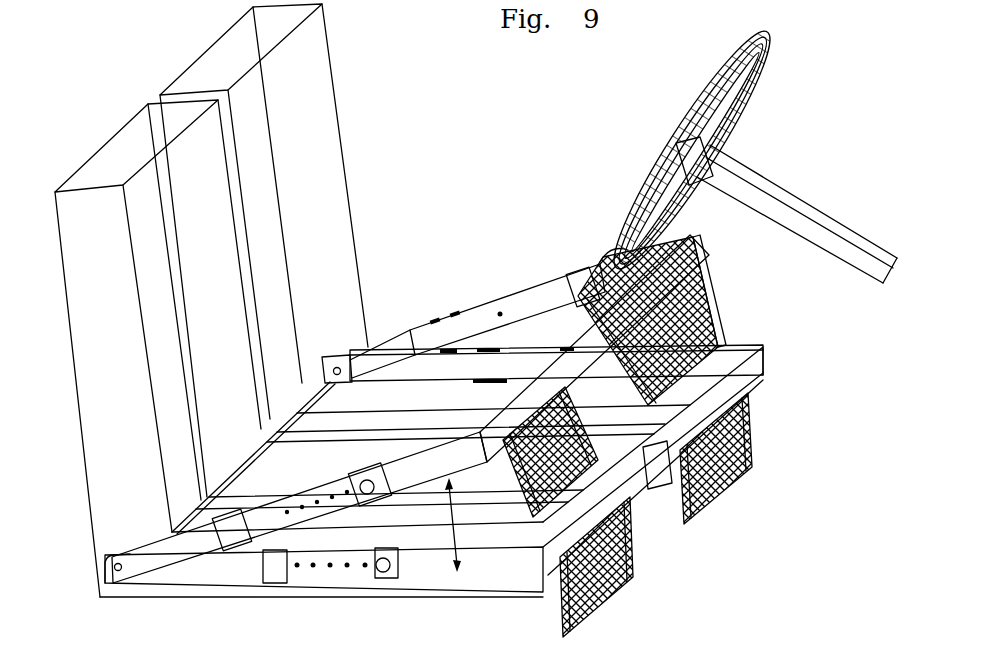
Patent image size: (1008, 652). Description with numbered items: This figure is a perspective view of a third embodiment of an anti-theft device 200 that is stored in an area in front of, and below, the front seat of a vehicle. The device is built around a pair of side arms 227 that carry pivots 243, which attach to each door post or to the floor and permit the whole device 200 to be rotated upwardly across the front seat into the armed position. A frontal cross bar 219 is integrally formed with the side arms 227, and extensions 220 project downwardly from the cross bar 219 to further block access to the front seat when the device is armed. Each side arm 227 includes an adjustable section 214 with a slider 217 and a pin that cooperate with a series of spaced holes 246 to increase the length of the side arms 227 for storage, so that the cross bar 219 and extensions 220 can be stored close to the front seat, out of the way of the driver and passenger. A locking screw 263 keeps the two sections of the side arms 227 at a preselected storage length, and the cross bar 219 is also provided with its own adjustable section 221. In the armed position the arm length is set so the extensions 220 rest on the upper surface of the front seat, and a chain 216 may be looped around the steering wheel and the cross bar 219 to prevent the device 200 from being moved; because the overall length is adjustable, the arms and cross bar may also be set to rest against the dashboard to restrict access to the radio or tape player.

The anti-theft device 200 is at (802, 415).
The adjustable section 214 is at (582, 283).
The chain 216 is at (683, 297).
The slider 217 is at (277, 568).
The frontal cross bar 219 is at (637, 497).
The extensions 220 is at (722, 478).
The adjustable section 221 is at (705, 333).
The side arms 227 is at (412, 340).
The pivots 243 is at (117, 577).
The spaced holes 246 is at (500, 314).
The locking screw 263 is at (383, 573).